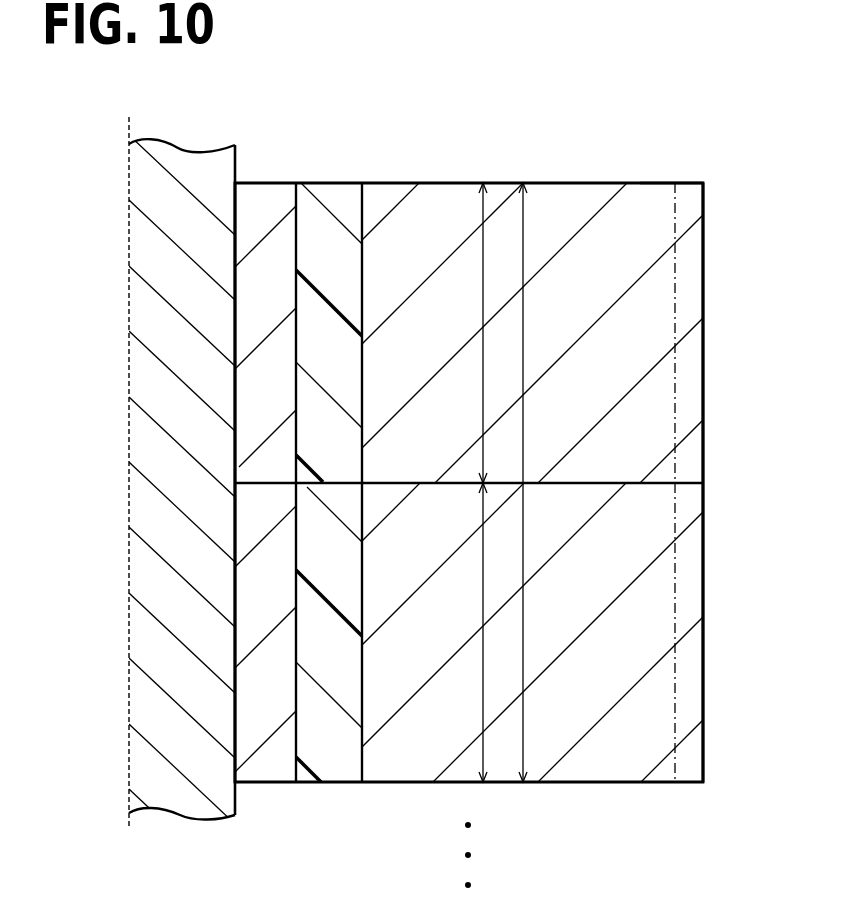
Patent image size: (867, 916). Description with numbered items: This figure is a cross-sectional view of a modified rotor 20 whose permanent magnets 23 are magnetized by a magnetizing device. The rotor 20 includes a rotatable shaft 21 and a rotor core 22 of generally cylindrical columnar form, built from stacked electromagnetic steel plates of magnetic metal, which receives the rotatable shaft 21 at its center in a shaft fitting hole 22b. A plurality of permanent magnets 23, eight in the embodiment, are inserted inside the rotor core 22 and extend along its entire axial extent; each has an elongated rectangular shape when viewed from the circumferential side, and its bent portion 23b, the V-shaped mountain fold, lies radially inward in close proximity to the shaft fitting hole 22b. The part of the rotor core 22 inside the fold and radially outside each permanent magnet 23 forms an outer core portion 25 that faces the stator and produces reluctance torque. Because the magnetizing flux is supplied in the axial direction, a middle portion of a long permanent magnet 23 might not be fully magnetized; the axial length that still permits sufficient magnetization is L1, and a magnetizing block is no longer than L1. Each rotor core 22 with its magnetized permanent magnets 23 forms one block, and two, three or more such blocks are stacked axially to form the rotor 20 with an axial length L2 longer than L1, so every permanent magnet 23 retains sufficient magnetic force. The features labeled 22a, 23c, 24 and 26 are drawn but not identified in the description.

The rotor 20 is at (507, 168).
The rotatable shaft 21 is at (172, 147).
The rotor core 22 is at (703, 183).
The side surface of layer 22a is at (703, 298).
The shaft fitting hole 22b is at (236, 178).
The permanent magnet 23 is at (532, 486).
The bent portion 23b is at (338, 194).
The second portion of functional layer (virtual line) 23c is at (675, 384).
The boundary 24 is at (364, 371).
The outer core portion 25 is at (590, 183).
The top surface 26 is at (659, 181).
The axial length L1 is at (482, 311).
The axial length L2 is at (524, 313).